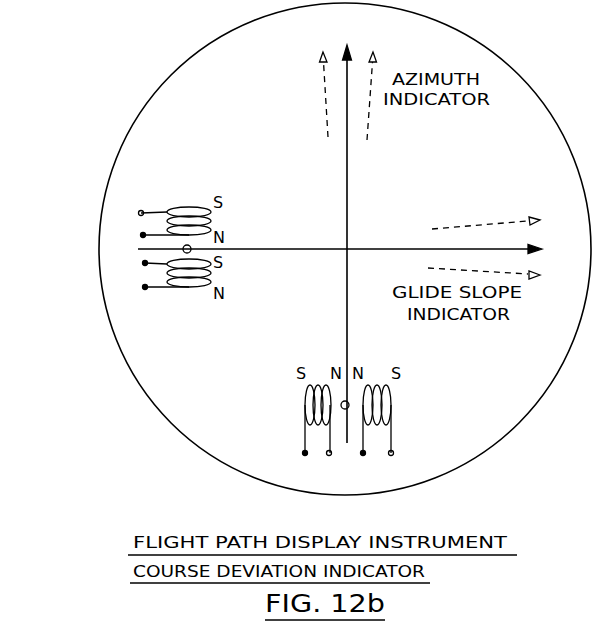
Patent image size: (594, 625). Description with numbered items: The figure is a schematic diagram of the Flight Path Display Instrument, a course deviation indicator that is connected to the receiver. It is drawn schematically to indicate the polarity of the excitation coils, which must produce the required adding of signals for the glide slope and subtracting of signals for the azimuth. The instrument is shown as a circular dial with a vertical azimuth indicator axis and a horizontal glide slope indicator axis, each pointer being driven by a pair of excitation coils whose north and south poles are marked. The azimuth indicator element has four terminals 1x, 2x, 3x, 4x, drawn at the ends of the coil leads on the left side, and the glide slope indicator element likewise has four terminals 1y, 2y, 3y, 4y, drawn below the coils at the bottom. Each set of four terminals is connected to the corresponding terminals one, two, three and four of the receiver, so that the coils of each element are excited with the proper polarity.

The terminal 1x is at (135, 220).
The terminal 2x is at (146, 242).
The terminal 3x is at (135, 268).
The terminal 4x is at (146, 293).
The terminal 1y is at (307, 444).
The terminal 2y is at (331, 444).
The terminal 3y is at (365, 444).
The terminal 4y is at (393, 444).